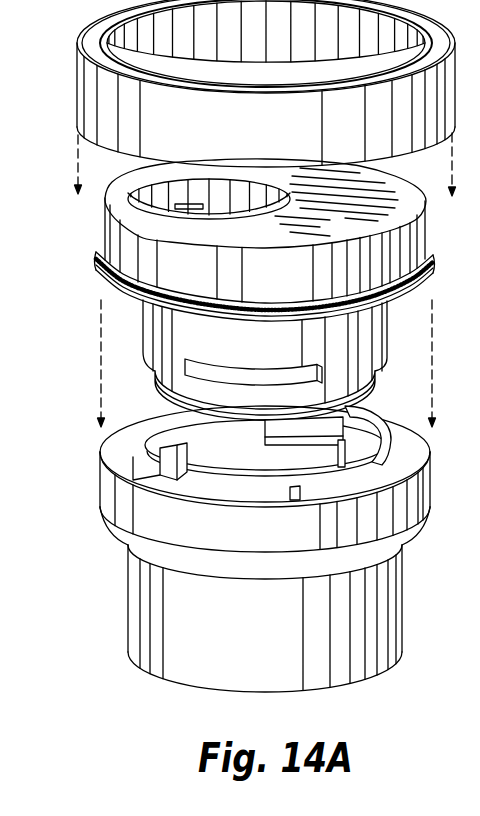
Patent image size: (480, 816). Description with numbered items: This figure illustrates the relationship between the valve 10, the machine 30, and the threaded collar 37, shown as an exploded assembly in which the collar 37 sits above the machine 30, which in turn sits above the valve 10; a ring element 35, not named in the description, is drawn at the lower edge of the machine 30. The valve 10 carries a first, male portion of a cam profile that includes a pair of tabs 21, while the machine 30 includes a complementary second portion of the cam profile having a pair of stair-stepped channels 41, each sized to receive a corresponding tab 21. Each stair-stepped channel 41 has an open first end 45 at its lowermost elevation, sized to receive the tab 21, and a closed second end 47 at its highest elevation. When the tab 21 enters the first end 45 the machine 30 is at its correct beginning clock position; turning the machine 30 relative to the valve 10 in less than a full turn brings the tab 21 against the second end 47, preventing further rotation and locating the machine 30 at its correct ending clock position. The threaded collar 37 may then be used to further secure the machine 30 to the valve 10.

The valve 10 is at (116, 614).
The tab 21 is at (198, 378).
The machine 30 is at (236, 289).
The gasket seal 35 is at (288, 272).
The threaded collar 37 is at (83, 73).
The stair-stepped channel 41 is at (265, 464).
The first end 45 is at (335, 420).
The second end 47 is at (178, 465).